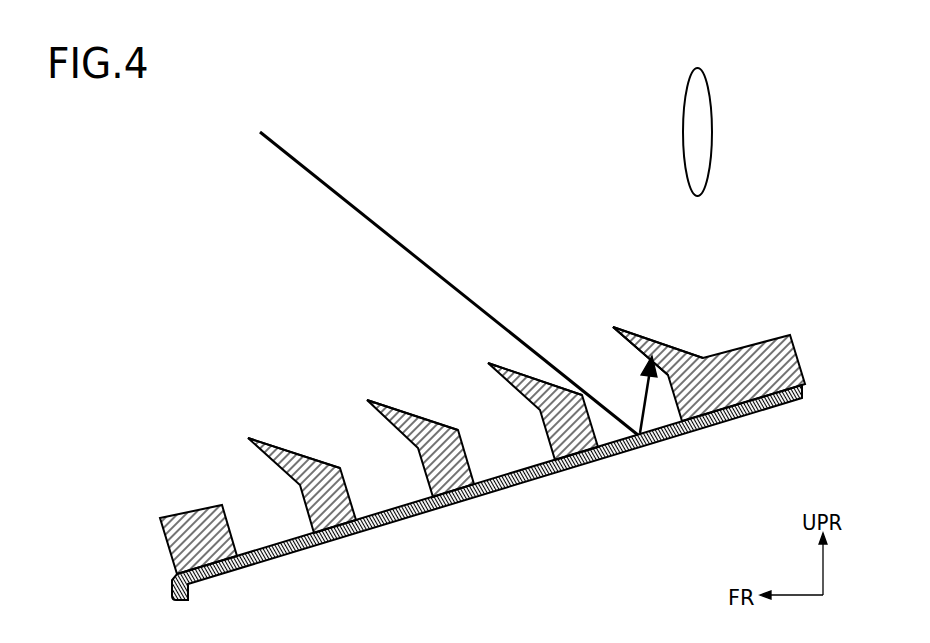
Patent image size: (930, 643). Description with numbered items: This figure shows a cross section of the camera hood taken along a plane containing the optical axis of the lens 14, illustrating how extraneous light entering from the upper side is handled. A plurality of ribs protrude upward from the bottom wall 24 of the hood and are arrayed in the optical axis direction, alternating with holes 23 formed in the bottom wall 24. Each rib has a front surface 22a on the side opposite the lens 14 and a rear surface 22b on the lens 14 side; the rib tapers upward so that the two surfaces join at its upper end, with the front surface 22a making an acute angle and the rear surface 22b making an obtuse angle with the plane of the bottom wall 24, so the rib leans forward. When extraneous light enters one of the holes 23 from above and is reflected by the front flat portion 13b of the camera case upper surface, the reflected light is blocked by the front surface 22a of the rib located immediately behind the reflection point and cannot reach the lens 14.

The front flat portion 13b is at (455, 488).
The lens 14 is at (712, 123).
The front surface 22a is at (267, 472).
The rear surface 22b is at (277, 448).
The hole 23 is at (268, 542).
The bottom wall 24 is at (161, 518).